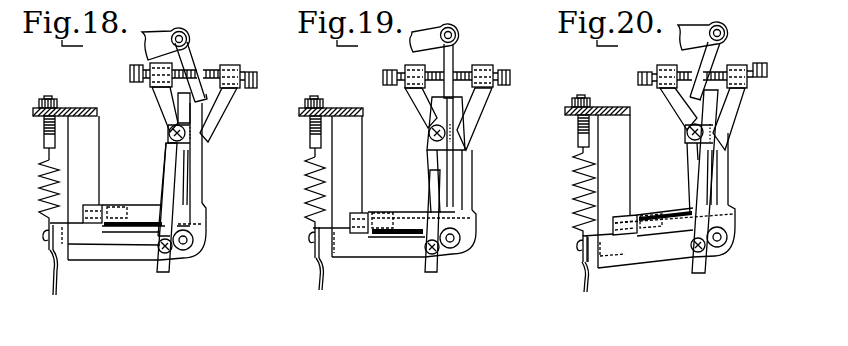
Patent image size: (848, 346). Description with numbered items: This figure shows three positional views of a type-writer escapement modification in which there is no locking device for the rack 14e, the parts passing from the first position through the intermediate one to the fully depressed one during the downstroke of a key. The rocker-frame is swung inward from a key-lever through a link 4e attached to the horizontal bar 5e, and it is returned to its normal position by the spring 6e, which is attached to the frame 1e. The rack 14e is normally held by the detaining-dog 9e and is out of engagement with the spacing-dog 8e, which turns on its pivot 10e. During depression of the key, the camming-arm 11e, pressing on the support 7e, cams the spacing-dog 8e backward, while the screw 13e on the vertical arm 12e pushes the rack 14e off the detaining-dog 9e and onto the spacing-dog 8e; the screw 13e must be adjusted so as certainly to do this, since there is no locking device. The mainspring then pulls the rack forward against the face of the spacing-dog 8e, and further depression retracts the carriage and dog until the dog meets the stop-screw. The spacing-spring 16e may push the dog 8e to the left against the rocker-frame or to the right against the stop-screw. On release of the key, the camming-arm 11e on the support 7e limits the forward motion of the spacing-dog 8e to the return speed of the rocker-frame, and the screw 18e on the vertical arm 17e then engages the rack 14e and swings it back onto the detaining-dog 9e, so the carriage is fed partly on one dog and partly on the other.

In FIG. 18, the frame 1e is at (83, 108).
In FIG. 19, the frame 1e is at (345, 108).
In FIG. 20, the frame 1e is at (608, 107).
In FIG. 18, the link 4e is at (51, 294).
In FIG. 19, the link 4e is at (318, 283).
In FIG. 20, the link 4e is at (582, 290).
In FIG. 18, the horizontal bar 5e is at (45, 240).
In FIG. 19, the horizontal bar 5e is at (311, 240).
In FIG. 20, the horizontal bar 5e is at (578, 245).
In FIG. 18, the spring 6e is at (40, 193).
In FIG. 19, the spring 6e is at (310, 193).
In FIG. 20, the spring 6e is at (577, 193).
In FIG. 18, the support 7e is at (198, 257).
In FIG. 19, the support 7e is at (465, 255).
In FIG. 20, the support 7e is at (725, 253).
In FIG. 18, the spacing-dog 8e is at (168, 155).
In FIG. 19, the spacing-dog 8e is at (432, 157).
In FIG. 20, the spacing-dog 8e is at (687, 152).
In FIG. 18, the detaining-dog 9e is at (201, 160).
In FIG. 19, the detaining-dog 9e is at (462, 157).
In FIG. 20, the detaining-dog 9e is at (720, 153).
In FIG. 18, the pivot 10e is at (83, 213).
In FIG. 19, the pivot 10e is at (349, 213).
In FIG. 20, the pivot 10e is at (612, 222).
In FIG. 18, the camming-arm 11e is at (115, 208).
In FIG. 19, the camming-arm 11e is at (382, 213).
In FIG. 20, the camming-arm 11e is at (643, 210).
In FIG. 18, the vertical arm 12e is at (227, 107).
In FIG. 19, the vertical arm 12e is at (483, 103).
In FIG. 20, the vertical arm 12e is at (740, 97).
In FIG. 18, the screw 13e is at (257, 73).
In FIG. 19, the screw 13e is at (511, 69).
In FIG. 20, the screw 13e is at (768, 67).
In FIG. 18, the rack 14e is at (190, 57).
In FIG. 19, the rack 14e is at (455, 55).
In FIG. 20, the rack 14e is at (722, 53).
In FIG. 18, the spacing-spring 16e is at (170, 195).
In FIG. 19, the spacing-spring 16e is at (433, 193).
In FIG. 20, the spacing-spring 16e is at (704, 181).
In FIG. 18, the vertical arm 17e is at (158, 107).
In FIG. 19, the vertical arm 17e is at (415, 112).
In FIG. 20, the vertical arm 17e is at (677, 105).
In FIG. 18, the screw 18e is at (129, 71).
In FIG. 19, the screw 18e is at (387, 72).
In FIG. 20, the screw 18e is at (642, 72).